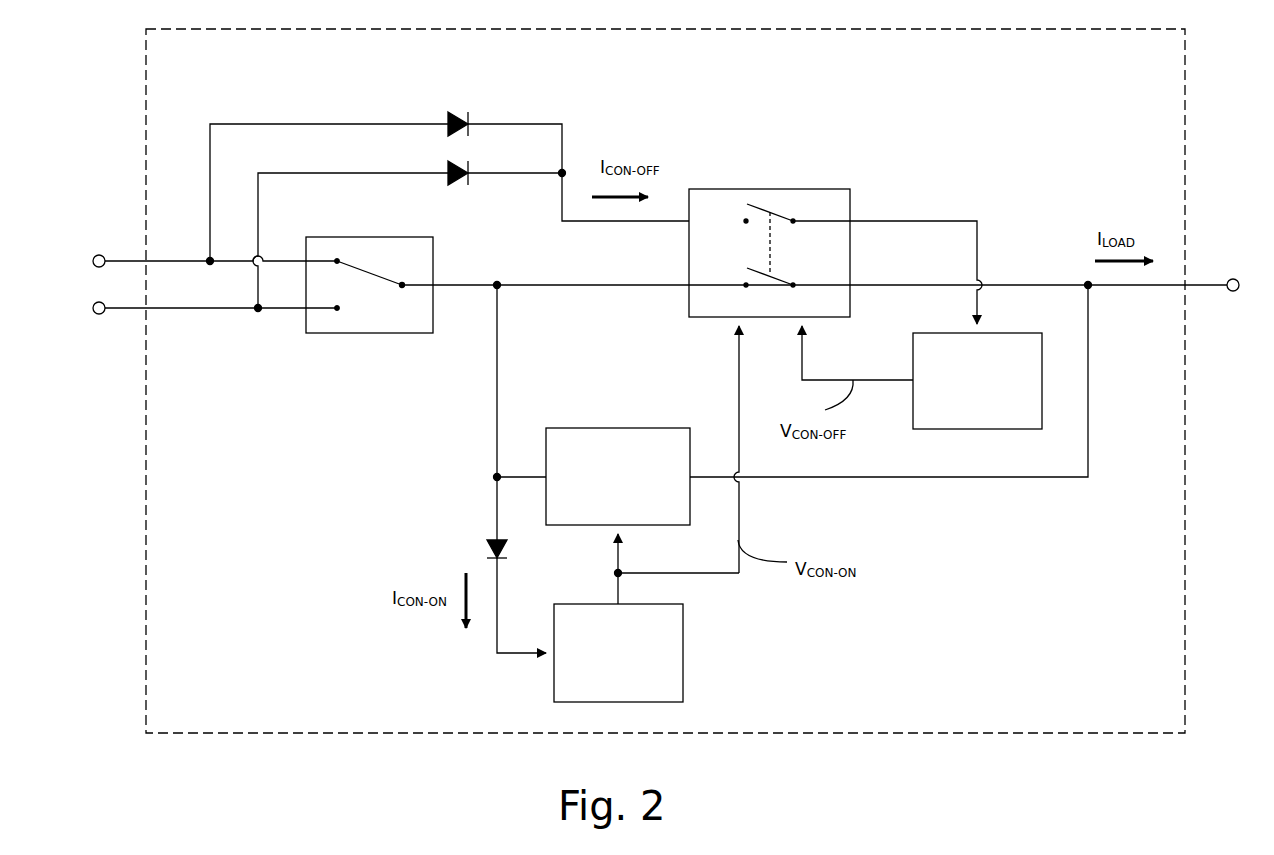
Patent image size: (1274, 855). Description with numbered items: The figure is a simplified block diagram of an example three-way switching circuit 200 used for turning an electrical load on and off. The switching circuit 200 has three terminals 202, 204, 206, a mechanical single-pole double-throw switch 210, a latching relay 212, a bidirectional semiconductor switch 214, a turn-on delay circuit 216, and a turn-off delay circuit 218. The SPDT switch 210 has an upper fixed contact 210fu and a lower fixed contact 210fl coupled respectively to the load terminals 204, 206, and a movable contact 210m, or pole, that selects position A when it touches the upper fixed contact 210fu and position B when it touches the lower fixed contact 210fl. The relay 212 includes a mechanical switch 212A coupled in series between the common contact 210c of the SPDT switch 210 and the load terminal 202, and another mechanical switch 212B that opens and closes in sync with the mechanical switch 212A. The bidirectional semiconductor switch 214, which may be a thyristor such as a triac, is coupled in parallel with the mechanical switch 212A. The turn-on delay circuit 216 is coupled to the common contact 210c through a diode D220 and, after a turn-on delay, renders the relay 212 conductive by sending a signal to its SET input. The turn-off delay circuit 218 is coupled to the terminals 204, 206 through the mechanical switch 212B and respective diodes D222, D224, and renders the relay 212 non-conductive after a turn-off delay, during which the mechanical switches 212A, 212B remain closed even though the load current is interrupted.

The three-way switching circuit 200 is at (857, 733).
The load terminal 202 is at (1233, 275).
The load terminal 204 is at (99, 250).
The load terminal 206 is at (99, 316).
The single-pole double-throw switch 210 is at (404, 306).
The upper fixed contact 210fu is at (337, 261).
The lower fixed contact 210fl is at (337, 308).
The movable contact 210m is at (382, 272).
The common contact 210c is at (402, 285).
The relay 212 is at (819, 236).
The mechanical switch 212A is at (785, 273).
The mechanical switch 212B is at (787, 204).
The bidirectional semiconductor switch 214 is at (652, 428).
The turn-on delay circuit 216 is at (683, 651).
The turn-off delay circuit 218 is at (930, 412).
The diode D220 is at (490, 548).
The diode D222 is at (458, 118).
The diode D224 is at (455, 185).